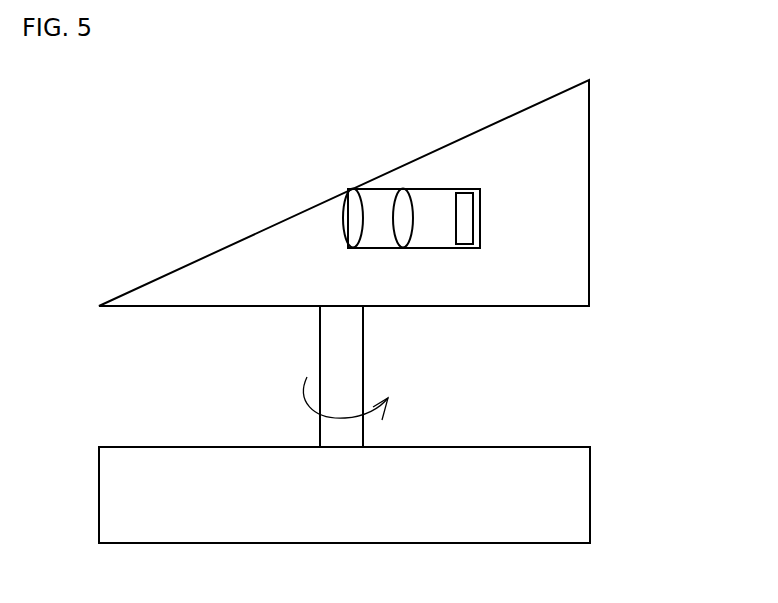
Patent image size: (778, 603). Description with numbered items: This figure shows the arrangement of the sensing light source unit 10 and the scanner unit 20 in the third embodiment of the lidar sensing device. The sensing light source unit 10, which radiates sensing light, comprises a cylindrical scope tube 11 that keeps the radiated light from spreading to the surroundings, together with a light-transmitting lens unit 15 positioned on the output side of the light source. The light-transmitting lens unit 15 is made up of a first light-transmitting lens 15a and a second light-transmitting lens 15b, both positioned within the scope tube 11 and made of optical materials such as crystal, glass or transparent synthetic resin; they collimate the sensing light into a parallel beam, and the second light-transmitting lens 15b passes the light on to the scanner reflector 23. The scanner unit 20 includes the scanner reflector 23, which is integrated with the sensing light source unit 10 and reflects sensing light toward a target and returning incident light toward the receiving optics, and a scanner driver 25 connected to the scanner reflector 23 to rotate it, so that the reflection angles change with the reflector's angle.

The sensing light source unit 10 is at (448, 255).
The scope tube 11 is at (427, 188).
The light-transmitting lens unit 15 is at (348, 160).
The first light-transmitting lens 15a is at (403, 200).
The second light-transmitting lens 15b is at (353, 207).
The scanner unit 20 is at (592, 192).
The scanner reflector 23 is at (589, 278).
The scanner driver 25 is at (590, 477).